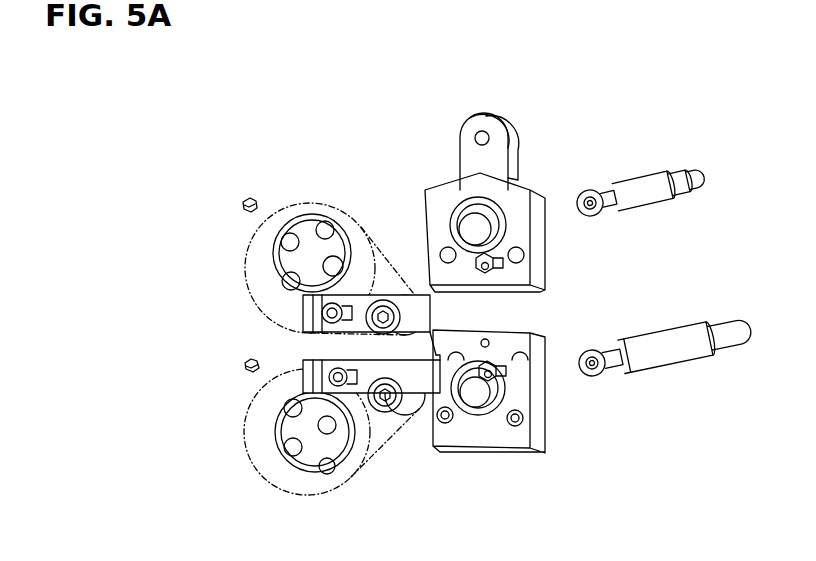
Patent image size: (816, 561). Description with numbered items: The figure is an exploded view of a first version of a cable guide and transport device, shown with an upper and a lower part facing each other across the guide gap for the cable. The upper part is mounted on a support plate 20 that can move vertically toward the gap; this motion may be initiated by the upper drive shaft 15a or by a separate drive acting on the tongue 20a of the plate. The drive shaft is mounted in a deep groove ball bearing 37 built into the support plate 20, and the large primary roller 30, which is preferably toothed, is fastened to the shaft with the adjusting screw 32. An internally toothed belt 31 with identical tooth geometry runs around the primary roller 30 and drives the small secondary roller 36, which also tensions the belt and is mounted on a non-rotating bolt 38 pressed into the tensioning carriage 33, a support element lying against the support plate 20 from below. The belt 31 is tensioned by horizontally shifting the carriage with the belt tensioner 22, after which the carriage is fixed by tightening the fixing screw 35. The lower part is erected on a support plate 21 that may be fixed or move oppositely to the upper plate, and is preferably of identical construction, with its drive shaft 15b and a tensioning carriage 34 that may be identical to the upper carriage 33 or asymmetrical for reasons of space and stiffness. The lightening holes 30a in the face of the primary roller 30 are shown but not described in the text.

The upper drive shaft 15a is at (650, 185).
The lower drive shaft 15b is at (662, 355).
The support plate 20 is at (493, 192).
The tongue 20a is at (478, 118).
The support plate 21 is at (530, 435).
The belt tensioner 22 is at (500, 265).
The large primary roller 30 is at (272, 262).
The pulley holes 30a is at (287, 235).
The toothed belt 31 is at (395, 258).
The adjusting screw 32 is at (244, 200).
The tensioning carriage 33 is at (303, 310).
The tensioning carriage 34 is at (305, 372).
The fixing screw 35 is at (305, 290).
The small secondary roller 36 is at (378, 312).
The deep groove ball bearing 37 is at (500, 215).
The non-rotating bolt 38 is at (392, 300).